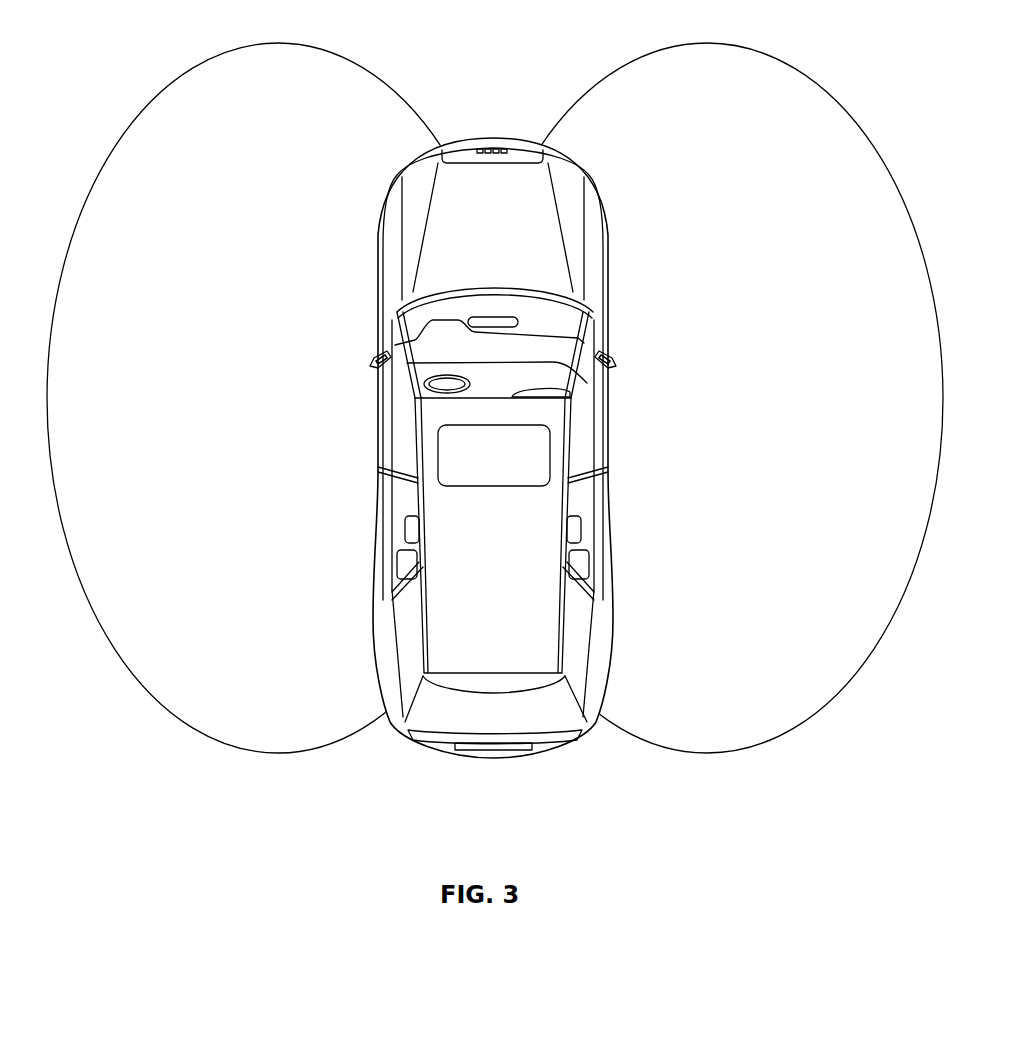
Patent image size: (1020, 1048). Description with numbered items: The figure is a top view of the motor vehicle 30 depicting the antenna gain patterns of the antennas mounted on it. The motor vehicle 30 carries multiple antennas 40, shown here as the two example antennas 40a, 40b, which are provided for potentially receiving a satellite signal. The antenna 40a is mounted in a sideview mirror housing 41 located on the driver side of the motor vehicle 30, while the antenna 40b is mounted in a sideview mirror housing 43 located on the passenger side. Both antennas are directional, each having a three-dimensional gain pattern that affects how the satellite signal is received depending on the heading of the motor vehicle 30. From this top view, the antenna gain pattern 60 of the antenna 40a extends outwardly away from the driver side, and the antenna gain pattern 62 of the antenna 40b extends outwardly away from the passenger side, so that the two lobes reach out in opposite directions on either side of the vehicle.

The motor vehicle 30 is at (498, 758).
The antennas 40 is at (385, 352).
The antenna 40a is at (371, 367).
The antenna 40b is at (613, 362).
The sideview mirror housing 41 is at (379, 362).
The sideview mirror housing 43 is at (609, 357).
The antenna gain pattern 60 is at (381, 72).
The antenna gain pattern 62 is at (842, 102).